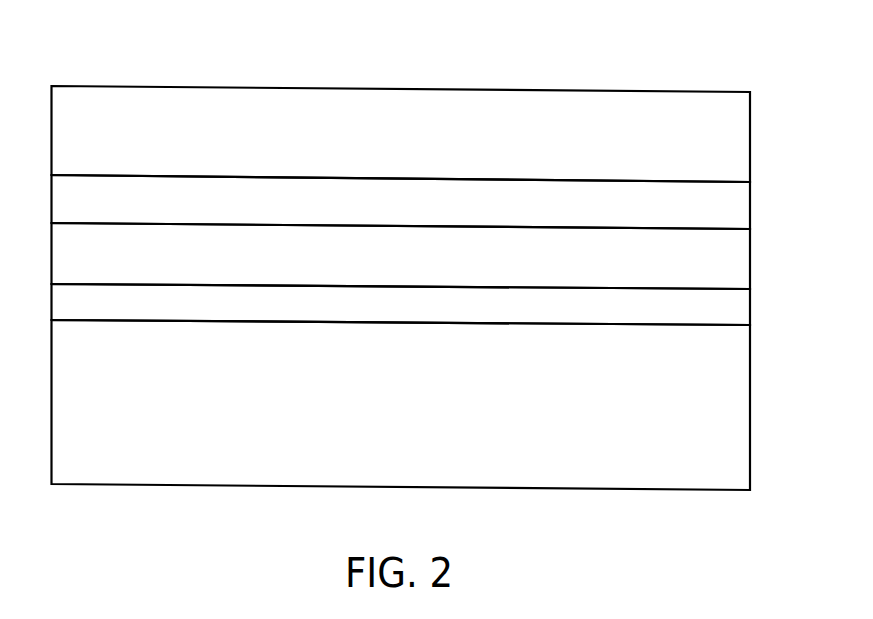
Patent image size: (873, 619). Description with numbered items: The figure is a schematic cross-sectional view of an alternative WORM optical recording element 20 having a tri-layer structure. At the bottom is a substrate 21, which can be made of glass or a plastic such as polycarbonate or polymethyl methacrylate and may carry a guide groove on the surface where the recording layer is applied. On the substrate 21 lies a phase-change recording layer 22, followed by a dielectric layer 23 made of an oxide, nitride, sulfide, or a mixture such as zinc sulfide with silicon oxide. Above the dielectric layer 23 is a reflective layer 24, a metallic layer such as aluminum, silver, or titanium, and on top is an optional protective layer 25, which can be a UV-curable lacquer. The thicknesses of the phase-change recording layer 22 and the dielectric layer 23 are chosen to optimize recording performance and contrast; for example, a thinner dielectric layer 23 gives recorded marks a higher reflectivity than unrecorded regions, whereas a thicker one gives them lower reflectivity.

The WORM optical recording element 20 is at (448, 249).
The substrate 21 is at (448, 405).
The phase-change recording layer 22 is at (448, 309).
The dielectric layer 23 is at (448, 256).
The reflective layer 24 is at (448, 210).
The protective layer 25 is at (448, 134).